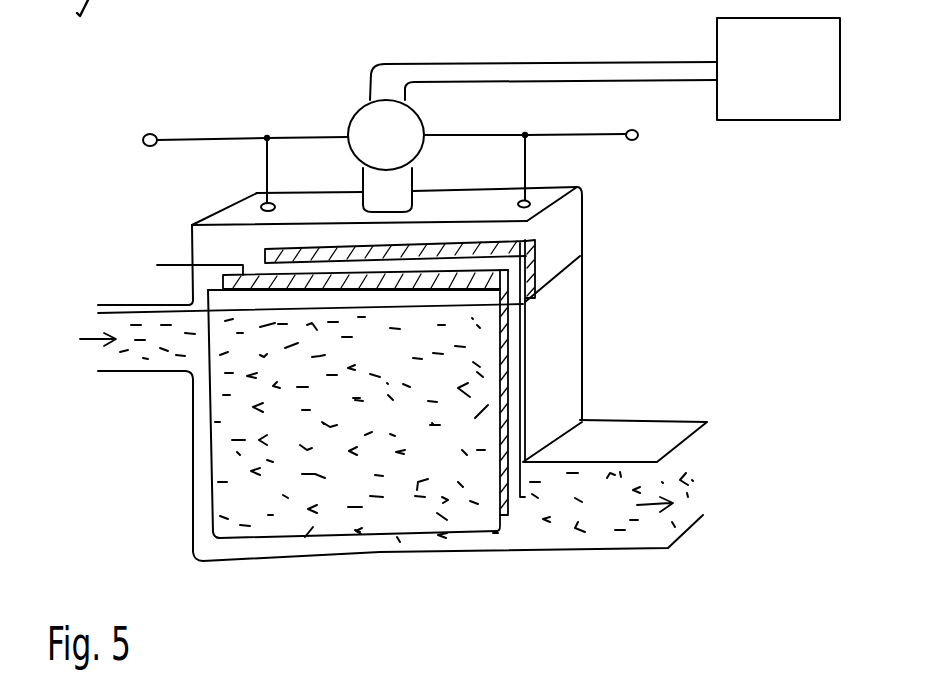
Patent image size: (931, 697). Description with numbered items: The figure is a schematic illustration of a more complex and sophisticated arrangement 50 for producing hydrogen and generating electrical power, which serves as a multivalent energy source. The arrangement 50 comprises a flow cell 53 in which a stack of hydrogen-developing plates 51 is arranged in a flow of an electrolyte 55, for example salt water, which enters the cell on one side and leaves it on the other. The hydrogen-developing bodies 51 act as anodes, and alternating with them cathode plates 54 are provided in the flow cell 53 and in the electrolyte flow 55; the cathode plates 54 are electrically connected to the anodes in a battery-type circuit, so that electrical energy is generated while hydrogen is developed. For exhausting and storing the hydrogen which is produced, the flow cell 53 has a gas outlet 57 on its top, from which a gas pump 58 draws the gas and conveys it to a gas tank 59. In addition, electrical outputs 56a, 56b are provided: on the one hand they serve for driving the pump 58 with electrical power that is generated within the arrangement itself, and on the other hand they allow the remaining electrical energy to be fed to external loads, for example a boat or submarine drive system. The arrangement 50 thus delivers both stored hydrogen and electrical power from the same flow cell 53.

The arrangement 50 is at (760, 286).
The hydrogen-developing plates 51 is at (491, 350).
The flow cell 53 is at (575, 363).
The cathode plates 54 is at (537, 246).
The electrolyte flow 55 is at (532, 517).
The electrical output 56a is at (161, 145).
The electrical output 56b is at (600, 136).
The gas outlet 57 is at (400, 181).
The gas pump 58 is at (350, 123).
The gas tank 59 is at (780, 107).